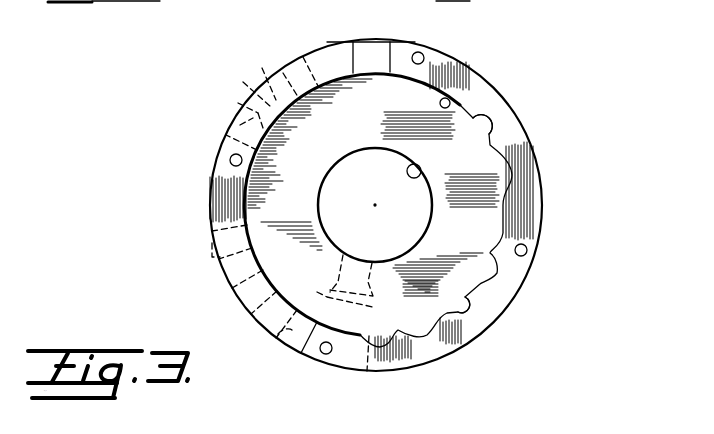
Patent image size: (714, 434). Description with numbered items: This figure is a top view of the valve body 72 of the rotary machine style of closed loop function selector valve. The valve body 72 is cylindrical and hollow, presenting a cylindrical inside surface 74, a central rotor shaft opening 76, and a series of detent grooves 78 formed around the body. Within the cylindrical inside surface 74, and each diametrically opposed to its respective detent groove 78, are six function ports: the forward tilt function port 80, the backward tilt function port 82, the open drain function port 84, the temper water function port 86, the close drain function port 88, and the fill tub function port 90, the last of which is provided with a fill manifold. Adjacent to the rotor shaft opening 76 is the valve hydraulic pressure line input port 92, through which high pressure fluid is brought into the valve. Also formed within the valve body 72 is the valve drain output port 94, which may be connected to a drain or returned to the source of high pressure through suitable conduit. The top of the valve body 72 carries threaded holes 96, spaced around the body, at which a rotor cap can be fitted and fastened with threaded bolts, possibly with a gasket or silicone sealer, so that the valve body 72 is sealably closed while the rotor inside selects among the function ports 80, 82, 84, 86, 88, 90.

The valve body 72 is at (466, 62).
The cylindrical inside surface 74 is at (460, 103).
The rotor shaft opening 76 is at (422, 176).
The detent grooves 78 is at (492, 126).
The forward tilt function port 80 is at (253, 307).
The backward tilt function port 82 is at (212, 243).
The open drain function port 84 is at (230, 114).
The temper water function port 86 is at (265, 70).
The close drain function port 88 is at (313, 50).
The fill tub function port 90 is at (366, 43).
The valve hydraulic pressure line input port 92 is at (353, 376).
The valve drain output port 94 is at (272, 340).
The threaded holes 96 is at (424, 54).